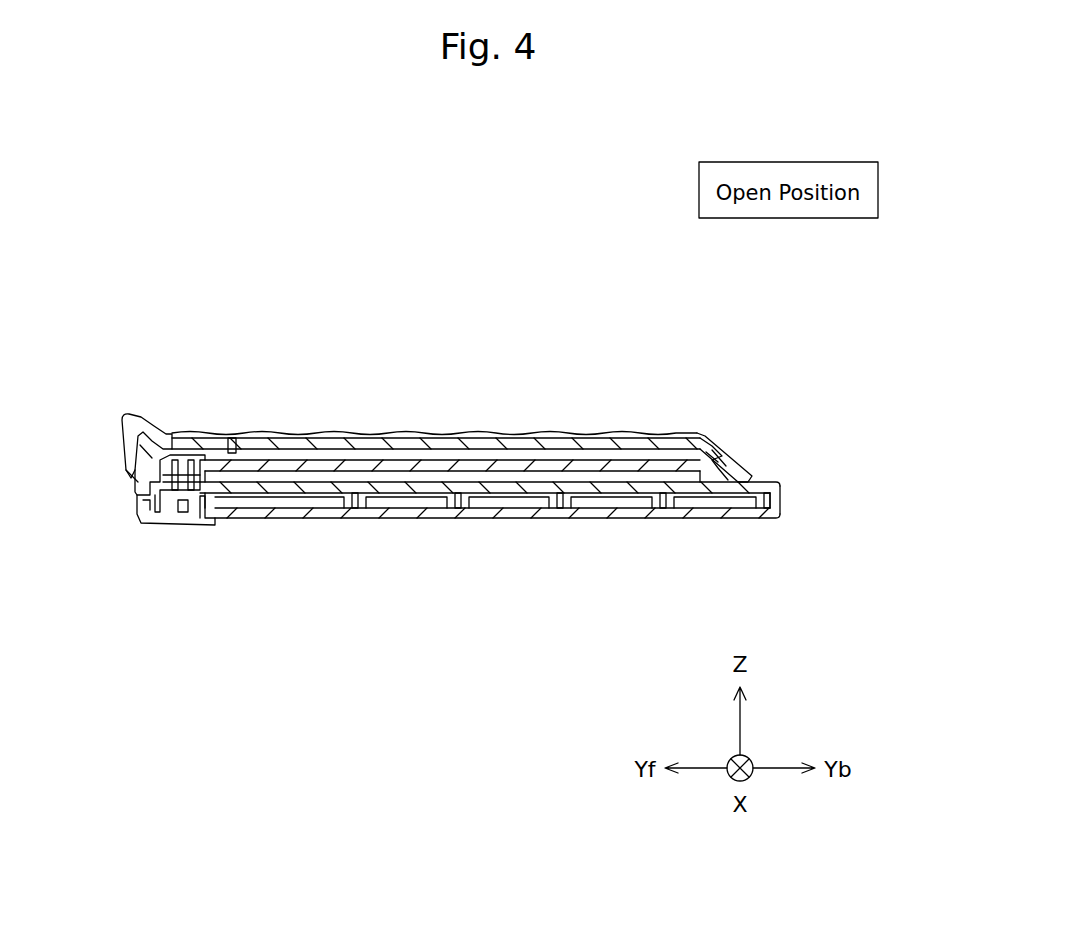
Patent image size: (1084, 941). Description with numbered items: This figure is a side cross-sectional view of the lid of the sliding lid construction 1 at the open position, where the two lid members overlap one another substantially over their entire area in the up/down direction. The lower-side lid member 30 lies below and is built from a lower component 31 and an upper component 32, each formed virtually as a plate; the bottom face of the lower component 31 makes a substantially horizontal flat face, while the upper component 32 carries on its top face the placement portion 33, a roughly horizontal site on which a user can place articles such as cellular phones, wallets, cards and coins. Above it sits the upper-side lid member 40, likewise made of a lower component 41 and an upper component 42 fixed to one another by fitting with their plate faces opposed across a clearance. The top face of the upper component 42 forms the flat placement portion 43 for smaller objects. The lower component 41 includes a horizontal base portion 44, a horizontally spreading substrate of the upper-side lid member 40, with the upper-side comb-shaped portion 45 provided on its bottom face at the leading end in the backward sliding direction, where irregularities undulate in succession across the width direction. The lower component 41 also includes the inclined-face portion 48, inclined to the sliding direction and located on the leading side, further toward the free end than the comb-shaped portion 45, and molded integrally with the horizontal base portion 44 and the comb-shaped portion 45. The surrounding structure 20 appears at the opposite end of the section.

The sliding lid construction 1 is at (307, 365).
The housing side wall portion 20 is at (230, 398).
The lower-side lid member 30 is at (487, 655).
The lower component 31 is at (522, 515).
The upper component 32 is at (587, 489).
The placement portion 33 is at (665, 478).
The upper-side lid member 40 is at (455, 330).
The lower component 41 is at (463, 466).
The upper component 42 is at (540, 446).
The placement portion 43 is at (420, 430).
The horizontal base portion 44 is at (395, 476).
The upper-side comb-shaped portion 45 is at (713, 458).
The inclined-face portion 48 is at (728, 456).